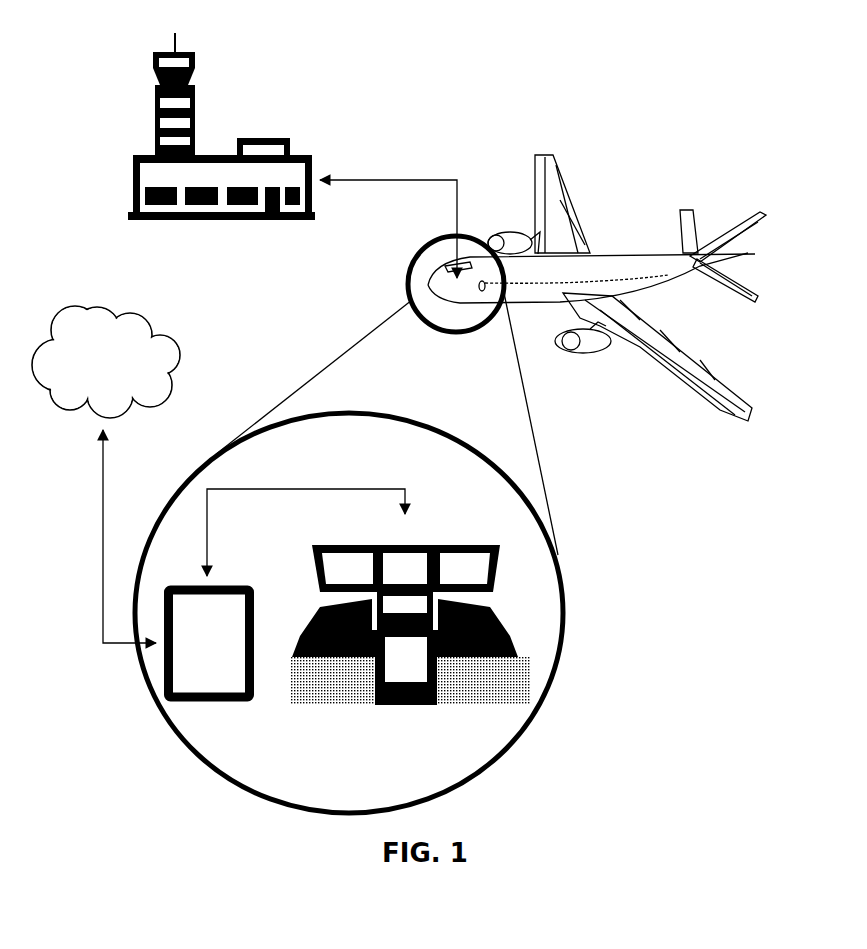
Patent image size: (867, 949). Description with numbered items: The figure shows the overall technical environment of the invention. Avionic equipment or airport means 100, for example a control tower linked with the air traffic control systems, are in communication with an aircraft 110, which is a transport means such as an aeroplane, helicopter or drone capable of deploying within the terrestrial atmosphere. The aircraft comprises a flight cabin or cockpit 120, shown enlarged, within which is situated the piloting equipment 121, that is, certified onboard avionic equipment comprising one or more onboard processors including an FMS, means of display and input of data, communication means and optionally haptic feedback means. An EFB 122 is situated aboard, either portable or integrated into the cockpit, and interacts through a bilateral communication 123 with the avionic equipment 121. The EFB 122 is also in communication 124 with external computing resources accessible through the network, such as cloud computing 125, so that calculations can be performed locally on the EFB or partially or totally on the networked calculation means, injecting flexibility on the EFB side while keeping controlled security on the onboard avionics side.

The avionic equipment or airport means 100 is at (208, 50).
The aircraft 110 is at (570, 160).
The cockpit 120 is at (418, 253).
The piloting equipment 121 is at (455, 537).
The EFB 122 is at (228, 574).
The bilateral communication 123 is at (300, 490).
The communication 124 is at (110, 527).
The cloud computing 125 is at (126, 312).